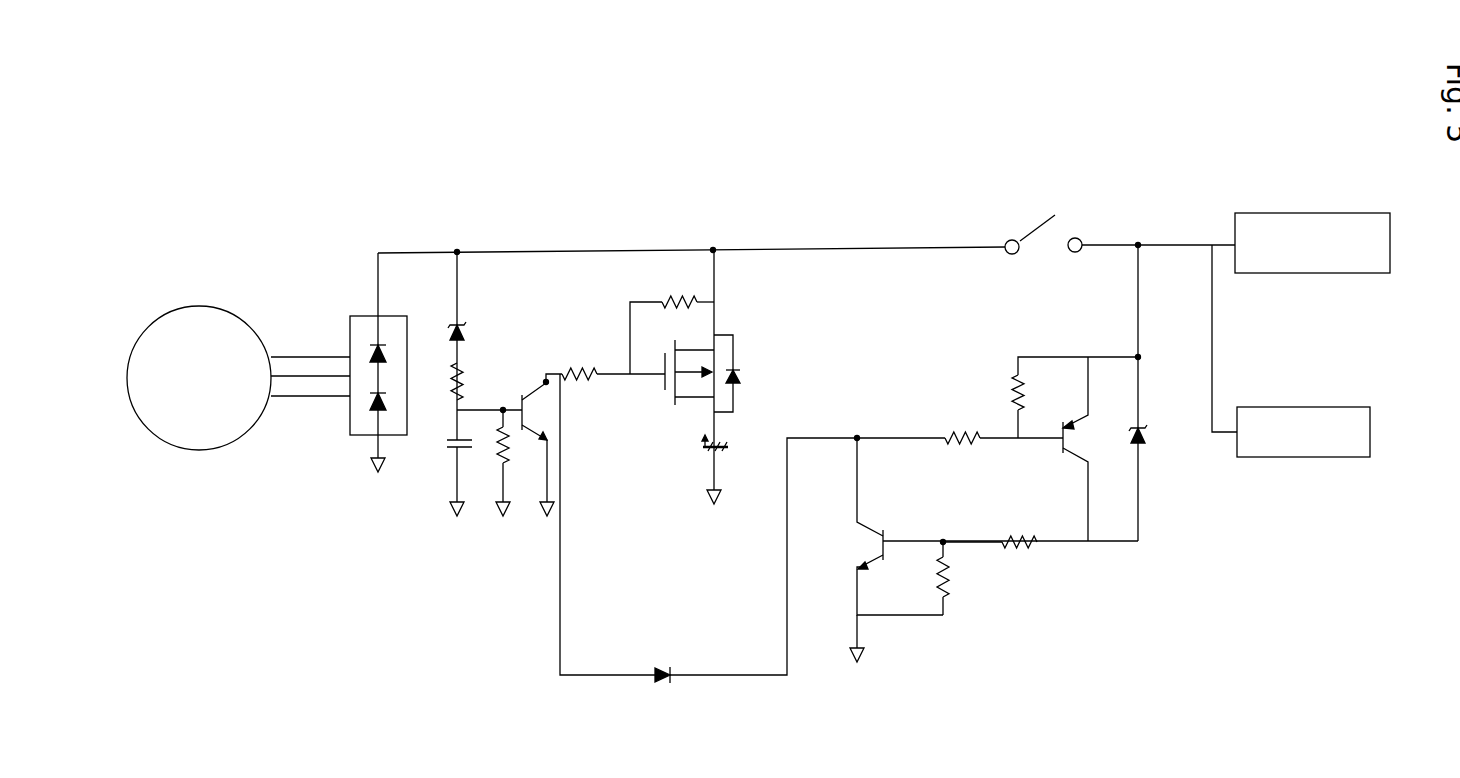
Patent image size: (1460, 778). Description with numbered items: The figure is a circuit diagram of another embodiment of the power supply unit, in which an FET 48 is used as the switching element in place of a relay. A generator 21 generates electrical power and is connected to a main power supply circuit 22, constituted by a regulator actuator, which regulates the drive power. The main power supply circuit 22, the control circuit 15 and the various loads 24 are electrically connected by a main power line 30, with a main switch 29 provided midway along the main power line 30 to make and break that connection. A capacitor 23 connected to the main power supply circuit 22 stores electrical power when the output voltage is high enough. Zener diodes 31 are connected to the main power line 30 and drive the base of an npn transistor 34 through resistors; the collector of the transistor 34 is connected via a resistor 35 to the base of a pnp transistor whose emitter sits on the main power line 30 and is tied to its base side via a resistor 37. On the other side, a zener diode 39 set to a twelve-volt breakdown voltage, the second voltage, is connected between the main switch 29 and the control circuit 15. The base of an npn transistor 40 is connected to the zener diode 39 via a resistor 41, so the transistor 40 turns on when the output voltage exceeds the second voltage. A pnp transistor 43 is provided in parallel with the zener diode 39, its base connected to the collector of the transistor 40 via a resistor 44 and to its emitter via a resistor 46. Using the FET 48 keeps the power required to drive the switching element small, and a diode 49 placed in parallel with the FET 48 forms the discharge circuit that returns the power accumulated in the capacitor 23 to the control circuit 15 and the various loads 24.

The control circuit 15 is at (1278, 273).
The generator 21 is at (190, 450).
The main power supply circuit 22 is at (353, 436).
The capacitor 23 is at (707, 448).
The various loads 24 is at (1303, 457).
The main switch 29 is at (1030, 233).
The main power line 30 is at (855, 247).
The zener diodes 31 is at (467, 340).
The npn transistor 34 is at (533, 393).
The resistor 35 is at (580, 368).
The resistor 37 is at (683, 302).
The zener diode 39 is at (1147, 443).
The npn transistor 40 is at (868, 527).
The resistor 41 is at (1027, 550).
The pnp transistor 43 is at (991, 515).
The resistor 44 is at (957, 433).
The resistor 46 is at (1013, 378).
The FET 48 is at (673, 404).
The diode 49 is at (740, 380).